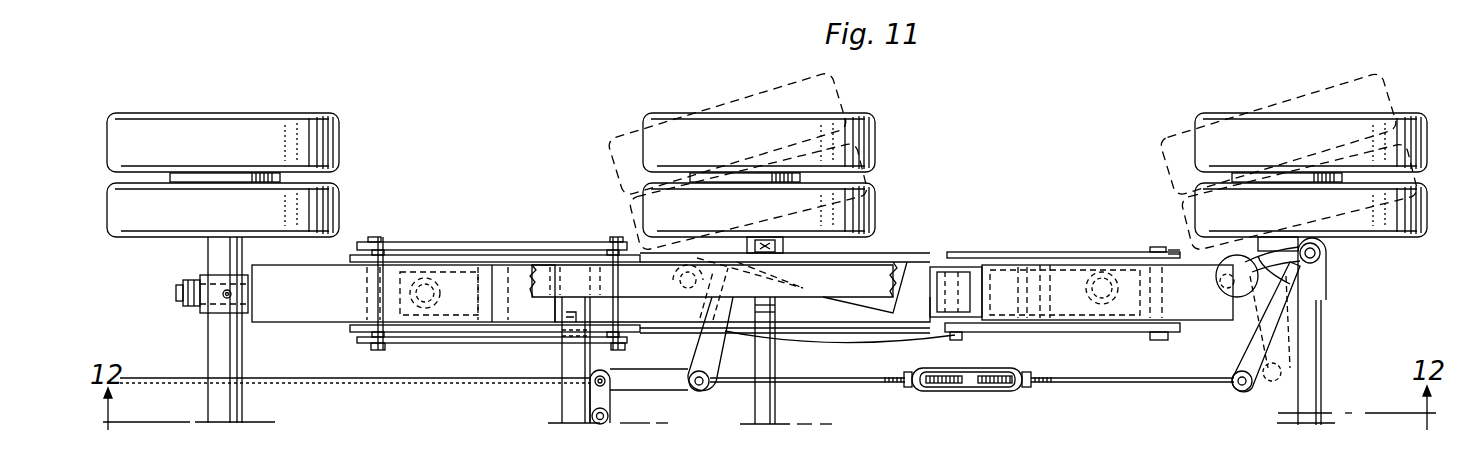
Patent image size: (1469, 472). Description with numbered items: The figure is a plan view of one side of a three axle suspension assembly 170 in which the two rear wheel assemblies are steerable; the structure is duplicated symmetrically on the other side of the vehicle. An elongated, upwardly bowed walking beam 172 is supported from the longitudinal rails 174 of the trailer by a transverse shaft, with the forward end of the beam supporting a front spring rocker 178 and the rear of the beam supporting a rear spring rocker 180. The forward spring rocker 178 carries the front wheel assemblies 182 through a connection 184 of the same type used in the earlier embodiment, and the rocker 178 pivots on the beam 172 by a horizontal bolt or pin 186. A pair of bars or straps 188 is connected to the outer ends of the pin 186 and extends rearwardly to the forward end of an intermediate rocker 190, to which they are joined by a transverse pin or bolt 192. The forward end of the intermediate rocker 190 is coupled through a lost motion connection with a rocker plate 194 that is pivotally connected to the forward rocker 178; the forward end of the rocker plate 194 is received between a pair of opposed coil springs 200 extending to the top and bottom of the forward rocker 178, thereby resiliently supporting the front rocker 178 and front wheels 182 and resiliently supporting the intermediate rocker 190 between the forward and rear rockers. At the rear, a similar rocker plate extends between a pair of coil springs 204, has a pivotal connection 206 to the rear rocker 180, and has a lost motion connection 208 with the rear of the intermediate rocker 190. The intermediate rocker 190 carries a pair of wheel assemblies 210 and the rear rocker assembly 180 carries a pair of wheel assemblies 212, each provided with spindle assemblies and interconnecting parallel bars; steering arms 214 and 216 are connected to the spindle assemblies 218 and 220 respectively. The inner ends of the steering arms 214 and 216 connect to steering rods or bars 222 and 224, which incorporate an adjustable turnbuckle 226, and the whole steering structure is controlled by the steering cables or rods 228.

The three axle suspension assembly 170 is at (379, 188).
The walking beam 172 is at (920, 258).
The longitudinal rails 174 is at (872, 278).
The front spring rocker 178 is at (310, 316).
The rear spring rocker 180 is at (1198, 302).
The front wheel assemblies 182 is at (235, 142).
The connection 184 is at (197, 274).
The horizontal bolt or pin 186 is at (381, 241).
The bars or straps 188 is at (512, 250).
The intermediate rocker 190 is at (873, 343).
The transverse pin or bolt 192 is at (614, 240).
The rocker plate 194 is at (459, 250).
The opposed coil springs 200 is at (433, 313).
The coil springs 204 is at (1108, 262).
The pivotal connection 206 is at (1033, 262).
The lost motion connection 208 is at (958, 339).
The wheel assemblies 210 is at (858, 134).
The wheel assemblies 212 is at (1402, 128).
The steering arm 214 is at (716, 356).
The steering arm 216 is at (1265, 302).
The spindle assembly 218 is at (698, 308).
The spindle assembly 220 is at (1300, 283).
The steering rod or bar 222 is at (631, 384).
The steering rod or bar 224 is at (1120, 383).
The adjustable turnbuckle 226 is at (970, 393).
The steering cables or rods 228 is at (337, 384).